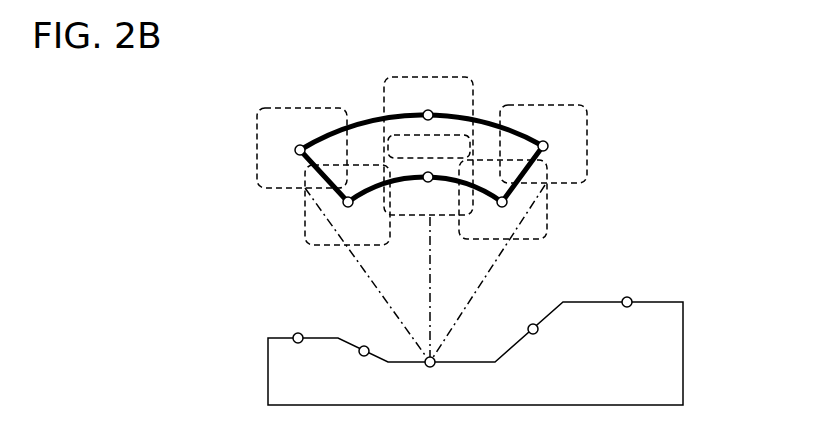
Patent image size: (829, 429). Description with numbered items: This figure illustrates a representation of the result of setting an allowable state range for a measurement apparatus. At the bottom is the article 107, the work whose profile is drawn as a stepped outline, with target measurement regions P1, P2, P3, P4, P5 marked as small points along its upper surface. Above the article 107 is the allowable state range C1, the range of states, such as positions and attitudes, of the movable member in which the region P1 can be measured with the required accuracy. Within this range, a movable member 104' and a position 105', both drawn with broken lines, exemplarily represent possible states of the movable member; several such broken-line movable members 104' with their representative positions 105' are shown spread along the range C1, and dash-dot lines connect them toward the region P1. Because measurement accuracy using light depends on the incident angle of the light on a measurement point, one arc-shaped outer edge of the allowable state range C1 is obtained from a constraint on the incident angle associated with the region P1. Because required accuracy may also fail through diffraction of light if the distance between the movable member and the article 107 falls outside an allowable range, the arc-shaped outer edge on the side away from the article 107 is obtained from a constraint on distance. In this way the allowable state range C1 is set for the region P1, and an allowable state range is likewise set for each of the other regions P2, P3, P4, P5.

The movable member 104' is at (424, 161).
The position 105' is at (424, 165).
The allowable state range C1 is at (372, 119).
The article 107 is at (685, 345).
The region P1 is at (430, 374).
The measurement region P2 is at (361, 364).
The measurement region P3 is at (300, 350).
The measurement region P4 is at (536, 343).
The measurement region P5 is at (628, 314).